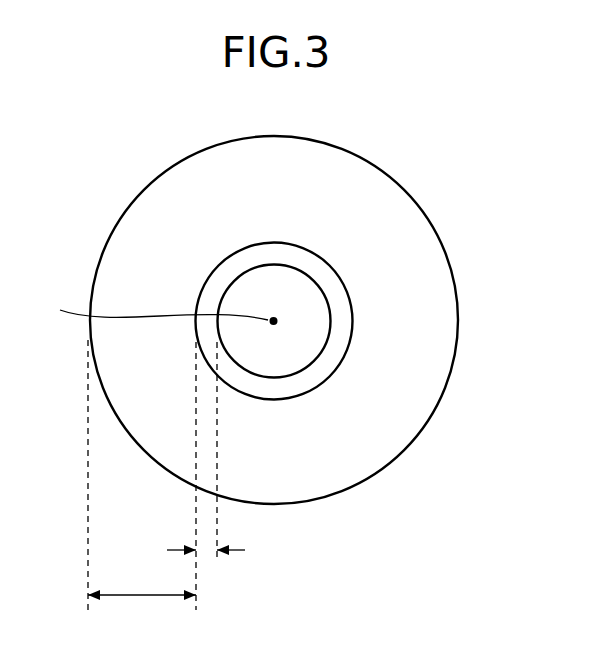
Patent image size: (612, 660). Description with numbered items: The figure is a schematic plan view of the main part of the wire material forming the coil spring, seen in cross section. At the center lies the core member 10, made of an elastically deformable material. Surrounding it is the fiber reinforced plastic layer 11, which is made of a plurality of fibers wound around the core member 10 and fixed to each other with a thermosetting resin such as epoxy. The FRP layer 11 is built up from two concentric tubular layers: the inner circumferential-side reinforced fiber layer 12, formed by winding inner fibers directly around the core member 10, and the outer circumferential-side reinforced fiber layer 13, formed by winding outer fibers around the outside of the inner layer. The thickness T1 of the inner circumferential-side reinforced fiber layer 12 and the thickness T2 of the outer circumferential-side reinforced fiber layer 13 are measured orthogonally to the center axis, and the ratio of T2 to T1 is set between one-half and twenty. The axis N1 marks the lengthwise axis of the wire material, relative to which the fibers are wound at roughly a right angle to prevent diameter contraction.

The core member 10 is at (288, 316).
The fiber reinforced plastic (FRP) layer 11 is at (394, 172).
The inner circumferential-side reinforced fiber layer 12 is at (324, 278).
The outer circumferential-side reinforced fiber layer 13 is at (302, 309).
The axis N1 is at (149, 313).
The thickness of the inner circumferential-side reinforced fiber layer T1 is at (207, 548).
The thickness of the outer circumferential-side reinforced fiber layer T2 is at (142, 582).